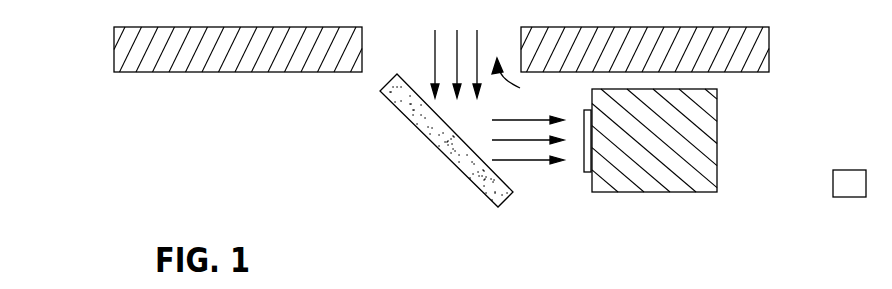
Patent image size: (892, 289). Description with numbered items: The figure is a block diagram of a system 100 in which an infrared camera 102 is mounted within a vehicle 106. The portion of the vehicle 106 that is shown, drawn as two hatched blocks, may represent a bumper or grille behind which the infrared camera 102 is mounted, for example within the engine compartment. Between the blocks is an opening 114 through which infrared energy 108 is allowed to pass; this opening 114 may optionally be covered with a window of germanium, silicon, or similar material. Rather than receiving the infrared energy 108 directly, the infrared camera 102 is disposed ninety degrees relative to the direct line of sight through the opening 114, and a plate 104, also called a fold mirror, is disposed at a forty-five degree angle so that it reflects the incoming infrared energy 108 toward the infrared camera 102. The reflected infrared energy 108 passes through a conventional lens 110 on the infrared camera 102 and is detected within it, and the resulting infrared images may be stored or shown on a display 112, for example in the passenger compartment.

The system 100 is at (190, 142).
The infrared camera 102 is at (718, 175).
The plate 104 is at (440, 150).
The vehicle 106 is at (104, 53).
The infrared energy 108 is at (434, 57).
The lens 110 is at (586, 174).
The display 112 is at (852, 170).
The opening 114 is at (516, 85).